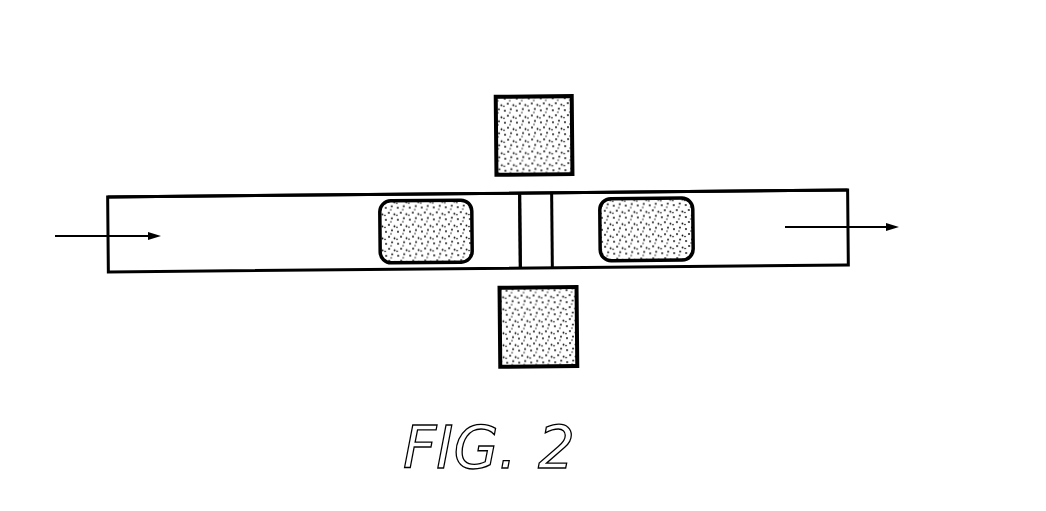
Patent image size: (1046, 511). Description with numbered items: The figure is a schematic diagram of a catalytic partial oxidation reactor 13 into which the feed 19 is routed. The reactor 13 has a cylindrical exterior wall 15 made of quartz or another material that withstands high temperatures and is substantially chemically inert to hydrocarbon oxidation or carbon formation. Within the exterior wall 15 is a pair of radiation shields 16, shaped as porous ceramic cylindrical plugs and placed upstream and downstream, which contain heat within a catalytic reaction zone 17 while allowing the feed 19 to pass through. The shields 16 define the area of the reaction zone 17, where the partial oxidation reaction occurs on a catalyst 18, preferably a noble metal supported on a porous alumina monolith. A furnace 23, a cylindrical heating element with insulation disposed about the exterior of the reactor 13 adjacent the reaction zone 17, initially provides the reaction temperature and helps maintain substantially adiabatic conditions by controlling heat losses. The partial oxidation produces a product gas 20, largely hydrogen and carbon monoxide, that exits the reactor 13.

The reactor 13 is at (331, 192).
The exterior wall 15 is at (182, 195).
The radiation shields 16 is at (380, 229).
The catalytic reaction zone 17 is at (573, 221).
The catalyst 18 is at (520, 238).
The feed 19 is at (93, 235).
The product gas 20 is at (857, 222).
The furnace 23 is at (577, 335).